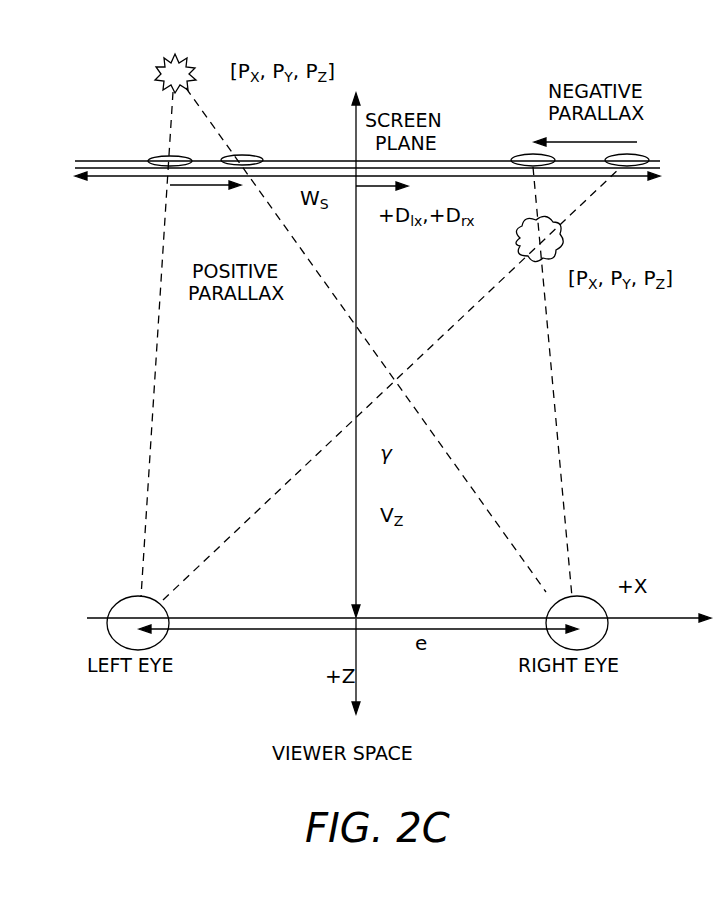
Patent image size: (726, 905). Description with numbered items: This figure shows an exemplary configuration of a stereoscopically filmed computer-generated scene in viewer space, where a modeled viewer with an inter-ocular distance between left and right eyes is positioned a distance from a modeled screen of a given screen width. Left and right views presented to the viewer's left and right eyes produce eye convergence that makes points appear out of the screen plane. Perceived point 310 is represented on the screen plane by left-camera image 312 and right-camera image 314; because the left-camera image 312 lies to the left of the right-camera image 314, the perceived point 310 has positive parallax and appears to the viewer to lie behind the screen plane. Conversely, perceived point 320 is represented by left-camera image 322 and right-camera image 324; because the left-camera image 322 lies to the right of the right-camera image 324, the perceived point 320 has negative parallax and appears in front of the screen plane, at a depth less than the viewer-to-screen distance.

The perceived point 310 is at (158, 76).
The left-camera image 312 is at (153, 158).
The right-camera image 314 is at (256, 155).
The perceived point 320 is at (562, 242).
The left-camera image 322 is at (645, 156).
The right-camera image 324 is at (525, 155).